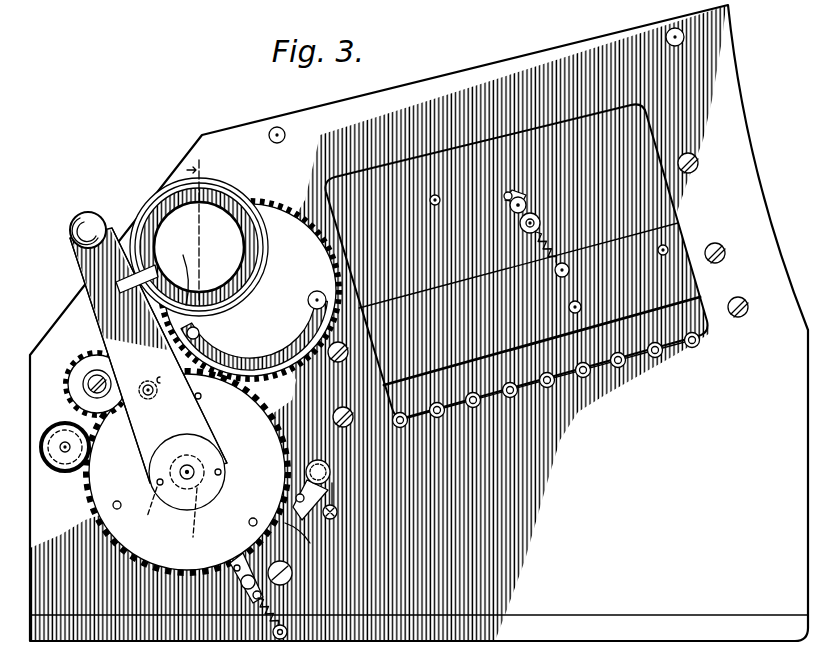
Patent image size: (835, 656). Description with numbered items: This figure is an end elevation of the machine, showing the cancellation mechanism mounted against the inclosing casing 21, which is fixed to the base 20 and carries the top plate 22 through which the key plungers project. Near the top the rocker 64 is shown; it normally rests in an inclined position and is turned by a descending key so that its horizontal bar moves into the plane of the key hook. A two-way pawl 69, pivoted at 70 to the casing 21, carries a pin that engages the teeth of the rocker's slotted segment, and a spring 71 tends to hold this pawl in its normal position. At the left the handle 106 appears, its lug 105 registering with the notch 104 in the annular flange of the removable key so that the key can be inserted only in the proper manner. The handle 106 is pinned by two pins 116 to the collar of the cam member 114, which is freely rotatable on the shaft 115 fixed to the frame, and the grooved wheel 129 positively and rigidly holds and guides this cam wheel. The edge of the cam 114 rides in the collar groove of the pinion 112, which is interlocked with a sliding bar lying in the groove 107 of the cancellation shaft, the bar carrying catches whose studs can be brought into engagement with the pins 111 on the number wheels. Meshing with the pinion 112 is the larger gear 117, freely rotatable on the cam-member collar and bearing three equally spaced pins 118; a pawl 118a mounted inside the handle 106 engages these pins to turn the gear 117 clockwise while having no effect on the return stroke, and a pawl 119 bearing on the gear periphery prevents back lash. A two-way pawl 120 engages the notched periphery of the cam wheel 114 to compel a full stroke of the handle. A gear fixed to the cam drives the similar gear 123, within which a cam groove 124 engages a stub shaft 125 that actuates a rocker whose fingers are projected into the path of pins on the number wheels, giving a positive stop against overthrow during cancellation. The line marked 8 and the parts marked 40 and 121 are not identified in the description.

The section line 8 is at (195, 221).
The base 20 is at (611, 620).
The inclosing casing 21 is at (178, 168).
The top plate 22 is at (443, 76).
The rollers 40 is at (659, 350).
The rocker 64 is at (581, 305).
The two-way pawl 69 is at (521, 229).
The pivot 70 is at (531, 206).
The spring 71 is at (549, 253).
The notch 104 is at (168, 250).
The lug 105 is at (137, 300).
The handle 106 is at (82, 278).
The groove 107 is at (148, 355).
The pins 111 is at (84, 393).
The pinion 112 is at (88, 356).
The cam 114 is at (66, 566).
The shaft 115 is at (168, 548).
The pins 116 is at (201, 398).
The gear 117 is at (187, 472).
The pins 118 is at (249, 522).
The pawl 118a is at (160, 403).
The pawl 119 is at (300, 556).
The two-way pawl 120 is at (192, 607).
The pawl 121 is at (323, 463).
The gear 123 is at (250, 290).
The cam groove 124 is at (268, 344).
The stub shaft 125 is at (330, 296).
The grooved wheel 129 is at (60, 472).